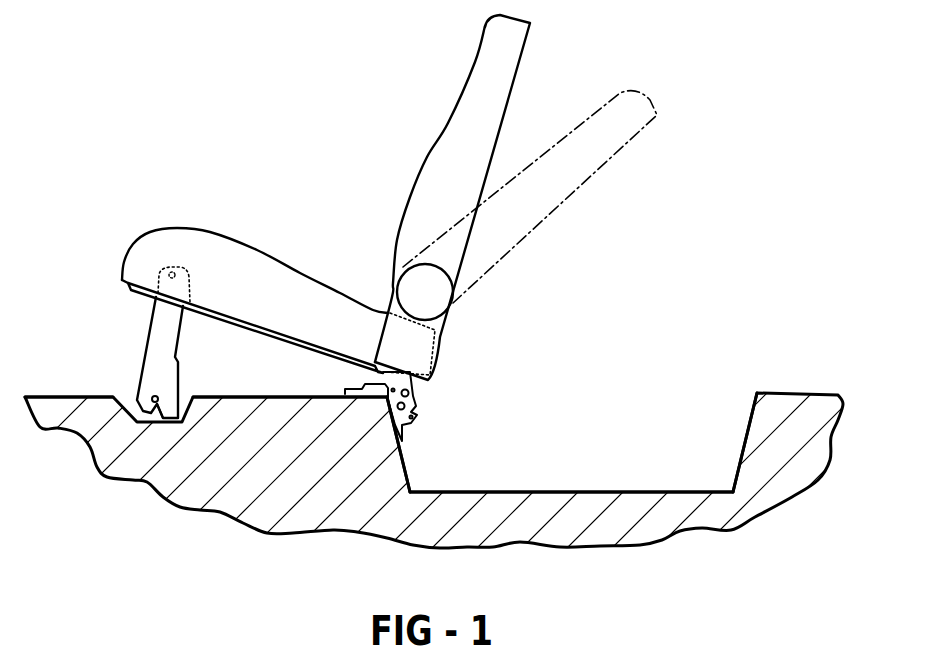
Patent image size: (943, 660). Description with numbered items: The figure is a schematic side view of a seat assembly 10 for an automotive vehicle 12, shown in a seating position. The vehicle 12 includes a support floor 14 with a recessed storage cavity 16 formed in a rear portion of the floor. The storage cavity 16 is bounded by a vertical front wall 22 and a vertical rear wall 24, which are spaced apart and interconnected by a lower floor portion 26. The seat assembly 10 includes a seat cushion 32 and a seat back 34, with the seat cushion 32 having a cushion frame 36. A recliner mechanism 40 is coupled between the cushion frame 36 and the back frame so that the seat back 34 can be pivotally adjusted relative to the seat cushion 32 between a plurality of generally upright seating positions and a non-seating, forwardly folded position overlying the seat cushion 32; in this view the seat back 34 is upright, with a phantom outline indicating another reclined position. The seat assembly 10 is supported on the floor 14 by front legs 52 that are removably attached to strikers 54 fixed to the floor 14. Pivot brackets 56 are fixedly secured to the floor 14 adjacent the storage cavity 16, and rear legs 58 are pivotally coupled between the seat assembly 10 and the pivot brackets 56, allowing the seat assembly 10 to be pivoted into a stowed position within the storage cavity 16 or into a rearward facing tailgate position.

The seat assembly 10 is at (379, 228).
The vehicle 12 is at (42, 430).
The support floor 14 is at (82, 396).
The recessed storage cavity 16 is at (578, 414).
The front wall 22 is at (405, 466).
The rear wall 24 is at (738, 472).
The lower floor portion 26 is at (576, 492).
The seat cushion 32 is at (188, 230).
The seat back 34 is at (475, 62).
The cushion frame 36 is at (232, 322).
The recliner mechanism 40 is at (452, 300).
The front legs 52 is at (163, 323).
The strikers 54 is at (152, 396).
The pivot brackets 56 is at (418, 422).
The rear legs 58 is at (413, 396).